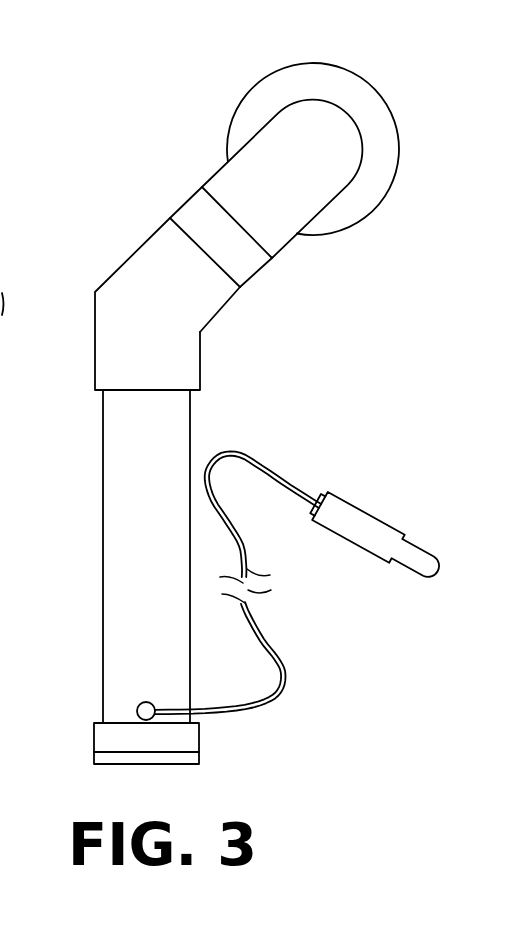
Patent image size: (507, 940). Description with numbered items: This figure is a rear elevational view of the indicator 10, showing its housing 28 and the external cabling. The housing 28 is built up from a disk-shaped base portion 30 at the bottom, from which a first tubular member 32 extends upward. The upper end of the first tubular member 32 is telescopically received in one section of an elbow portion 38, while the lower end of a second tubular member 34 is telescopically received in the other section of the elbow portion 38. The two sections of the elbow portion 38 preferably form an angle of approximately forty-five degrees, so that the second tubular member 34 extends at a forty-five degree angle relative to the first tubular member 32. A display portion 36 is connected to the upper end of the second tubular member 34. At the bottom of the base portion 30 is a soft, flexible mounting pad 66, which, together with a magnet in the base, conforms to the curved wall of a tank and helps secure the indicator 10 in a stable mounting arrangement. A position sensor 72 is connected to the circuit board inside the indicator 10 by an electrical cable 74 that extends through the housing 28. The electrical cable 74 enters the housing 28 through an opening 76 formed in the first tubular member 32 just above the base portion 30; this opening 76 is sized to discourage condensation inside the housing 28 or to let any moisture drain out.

The indicator 10 is at (157, 170).
The housing 28 is at (97, 270).
The disk-shaped base portion 30 is at (94, 725).
The first tubular member 32 is at (103, 537).
The second tubular member 34 is at (253, 268).
The display portion 36 is at (312, 65).
The elbow portion 38 is at (203, 332).
The mounting pad 66 is at (199, 755).
The position sensor 72 is at (372, 523).
The electrical cable 74 is at (230, 452).
The opening 76 is at (132, 706).